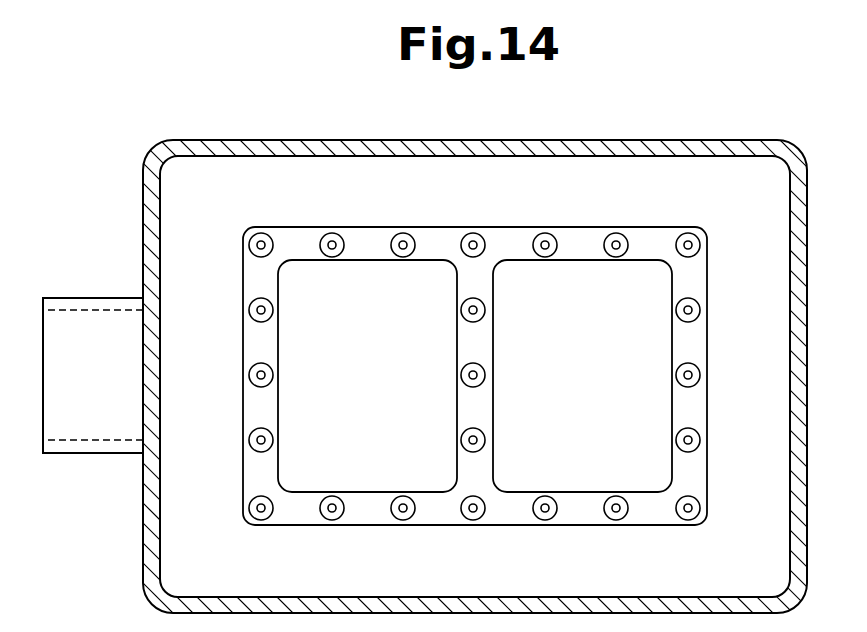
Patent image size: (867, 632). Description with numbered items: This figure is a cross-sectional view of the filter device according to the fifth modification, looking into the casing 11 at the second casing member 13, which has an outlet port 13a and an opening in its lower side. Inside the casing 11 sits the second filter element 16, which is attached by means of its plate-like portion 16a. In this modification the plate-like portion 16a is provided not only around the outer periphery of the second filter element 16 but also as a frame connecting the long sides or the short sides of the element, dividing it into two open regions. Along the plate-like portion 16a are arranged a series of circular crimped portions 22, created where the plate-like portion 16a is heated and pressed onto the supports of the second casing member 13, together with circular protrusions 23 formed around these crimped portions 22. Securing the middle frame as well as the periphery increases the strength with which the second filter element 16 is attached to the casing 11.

The casing 11 is at (667, 140).
The second casing member 13 is at (499, 140).
The outlet port 13a is at (104, 310).
The second filter element 16 is at (345, 227).
The plate-like portion 16a is at (437, 243).
The crimped portion 22 is at (545, 245).
The protrusion 23 is at (270, 369).